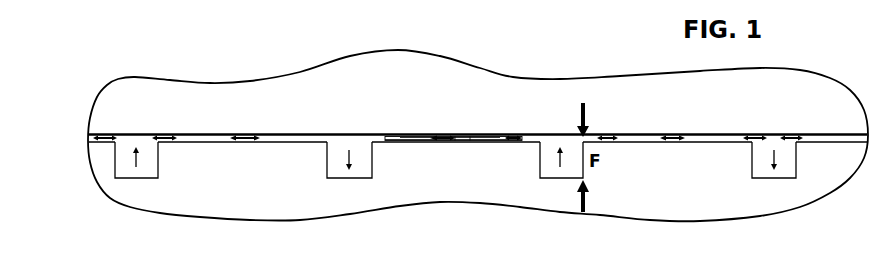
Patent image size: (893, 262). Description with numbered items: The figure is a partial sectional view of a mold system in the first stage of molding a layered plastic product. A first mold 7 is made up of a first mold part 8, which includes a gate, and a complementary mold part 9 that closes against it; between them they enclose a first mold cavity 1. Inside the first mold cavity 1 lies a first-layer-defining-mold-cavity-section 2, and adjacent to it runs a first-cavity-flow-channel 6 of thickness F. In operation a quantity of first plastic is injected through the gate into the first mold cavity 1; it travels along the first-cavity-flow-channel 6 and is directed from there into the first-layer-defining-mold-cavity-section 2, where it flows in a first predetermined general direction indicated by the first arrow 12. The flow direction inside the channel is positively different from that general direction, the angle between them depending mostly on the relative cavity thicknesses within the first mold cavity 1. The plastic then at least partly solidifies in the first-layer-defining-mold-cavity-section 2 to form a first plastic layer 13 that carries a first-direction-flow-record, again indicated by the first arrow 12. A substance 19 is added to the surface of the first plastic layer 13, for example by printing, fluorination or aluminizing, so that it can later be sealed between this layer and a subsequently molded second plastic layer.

The first mold cavity 1 is at (540, 158).
The first-layer-defining-mold-cavity-section 2 is at (404, 141).
The first-cavity-flow-channel 6 is at (558, 176).
The first mold 7 is at (80, 122).
The first mold part 8 is at (118, 192).
The complementary mold part 9 is at (123, 92).
The first arrow 12 is at (455, 141).
The first plastic layer 13 is at (484, 138).
The substance 19 is at (462, 143).